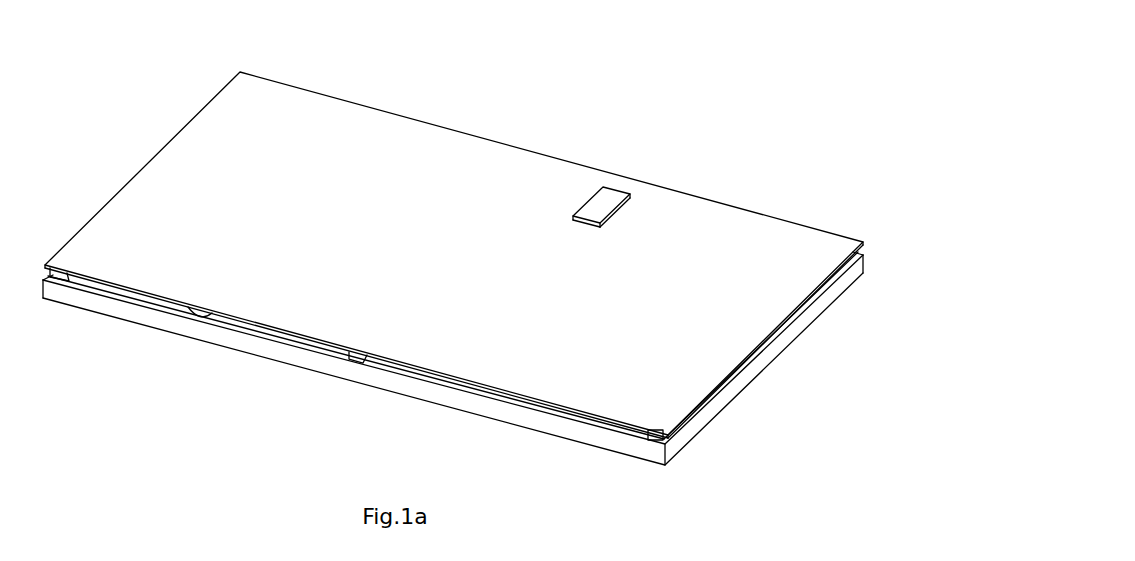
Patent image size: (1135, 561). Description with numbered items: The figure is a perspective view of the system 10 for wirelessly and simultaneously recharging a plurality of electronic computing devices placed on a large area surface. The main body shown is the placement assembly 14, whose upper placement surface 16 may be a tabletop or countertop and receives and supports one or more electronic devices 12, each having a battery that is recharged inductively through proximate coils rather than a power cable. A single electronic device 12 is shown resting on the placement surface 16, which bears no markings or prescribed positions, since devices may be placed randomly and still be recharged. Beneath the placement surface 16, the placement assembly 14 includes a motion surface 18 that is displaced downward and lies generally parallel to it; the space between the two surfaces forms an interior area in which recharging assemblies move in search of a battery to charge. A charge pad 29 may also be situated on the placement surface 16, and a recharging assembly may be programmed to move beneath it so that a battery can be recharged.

The system 10 is at (766, 97).
The electronic device 12 is at (605, 202).
The placement assembly 14 is at (785, 414).
The placement surface 16 is at (158, 183).
The motion surface 18 is at (135, 300).
The charge pad 29 is at (199, 313).